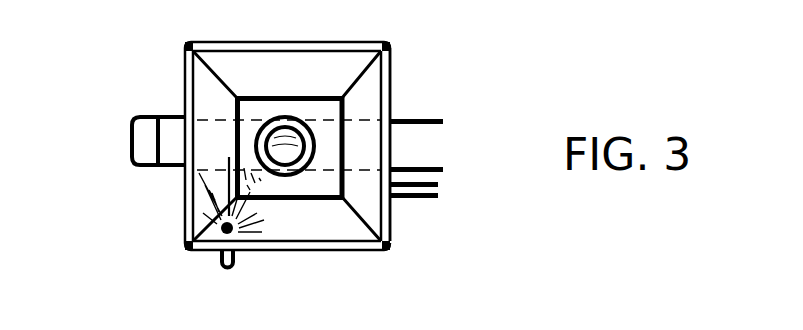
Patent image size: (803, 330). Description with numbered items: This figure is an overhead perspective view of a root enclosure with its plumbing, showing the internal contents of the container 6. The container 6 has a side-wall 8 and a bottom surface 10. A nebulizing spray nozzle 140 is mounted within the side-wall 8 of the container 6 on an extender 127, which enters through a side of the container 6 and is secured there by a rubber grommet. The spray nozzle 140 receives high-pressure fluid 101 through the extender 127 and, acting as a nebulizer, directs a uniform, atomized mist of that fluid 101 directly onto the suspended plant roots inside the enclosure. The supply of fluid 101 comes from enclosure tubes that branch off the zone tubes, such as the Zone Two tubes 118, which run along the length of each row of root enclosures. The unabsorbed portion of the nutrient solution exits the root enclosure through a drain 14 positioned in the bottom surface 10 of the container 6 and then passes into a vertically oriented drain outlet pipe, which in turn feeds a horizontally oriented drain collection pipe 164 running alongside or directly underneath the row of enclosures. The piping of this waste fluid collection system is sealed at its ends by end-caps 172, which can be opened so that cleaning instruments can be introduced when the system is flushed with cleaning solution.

The container 6 is at (388, 97).
The side-wall 8 is at (300, 223).
The bottom surface 10 is at (258, 108).
The drain 14 is at (295, 127).
The drain collection pipe 164 is at (425, 140).
The Zone Two tubes 118 is at (420, 193).
The end-caps 172 is at (142, 120).
The high-pressure fluid 101 is at (205, 196).
The spray nozzle 140 is at (235, 236).
The extender 127 is at (220, 257).